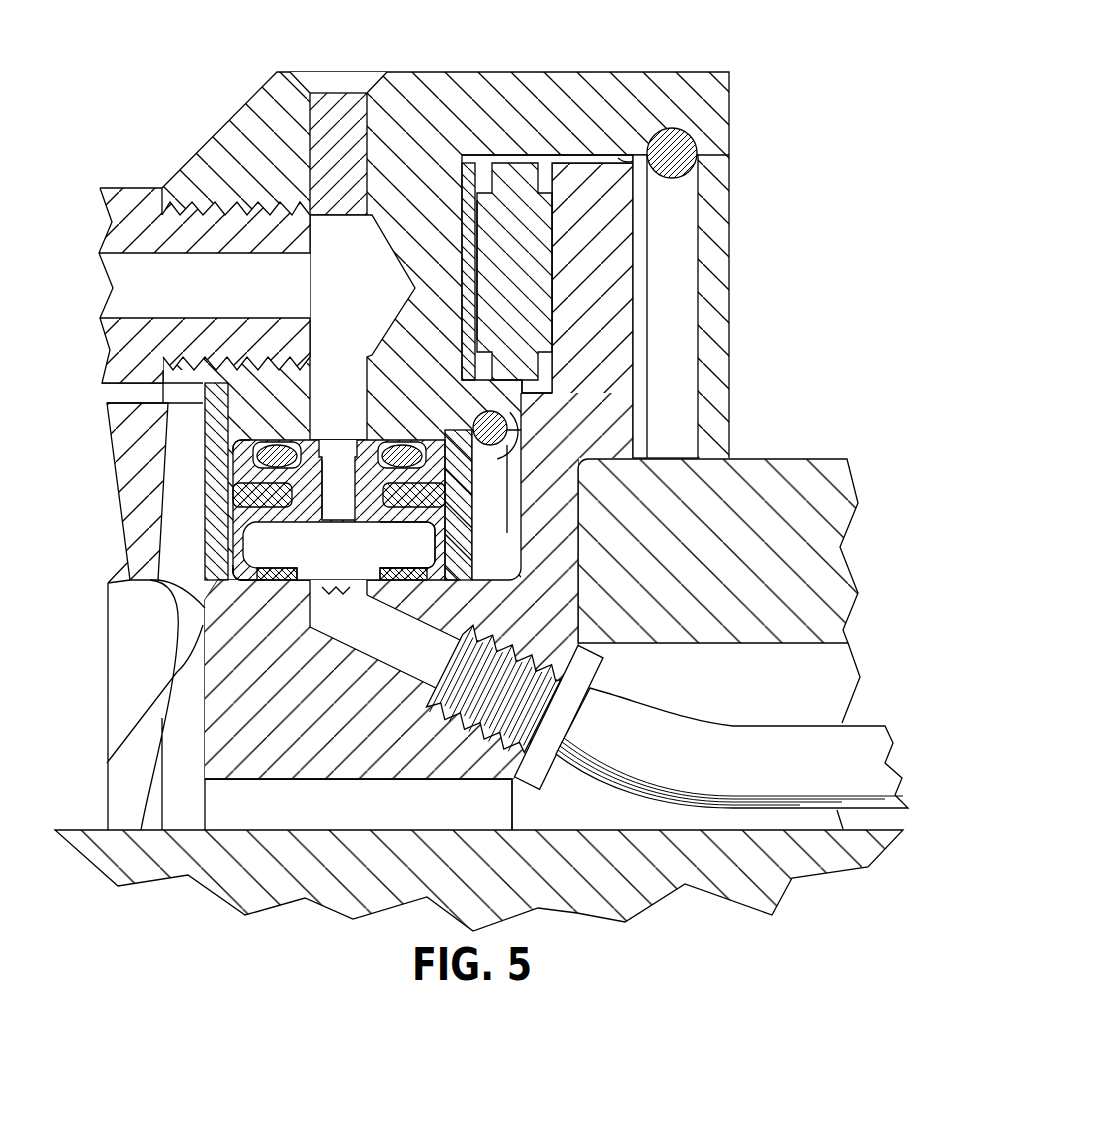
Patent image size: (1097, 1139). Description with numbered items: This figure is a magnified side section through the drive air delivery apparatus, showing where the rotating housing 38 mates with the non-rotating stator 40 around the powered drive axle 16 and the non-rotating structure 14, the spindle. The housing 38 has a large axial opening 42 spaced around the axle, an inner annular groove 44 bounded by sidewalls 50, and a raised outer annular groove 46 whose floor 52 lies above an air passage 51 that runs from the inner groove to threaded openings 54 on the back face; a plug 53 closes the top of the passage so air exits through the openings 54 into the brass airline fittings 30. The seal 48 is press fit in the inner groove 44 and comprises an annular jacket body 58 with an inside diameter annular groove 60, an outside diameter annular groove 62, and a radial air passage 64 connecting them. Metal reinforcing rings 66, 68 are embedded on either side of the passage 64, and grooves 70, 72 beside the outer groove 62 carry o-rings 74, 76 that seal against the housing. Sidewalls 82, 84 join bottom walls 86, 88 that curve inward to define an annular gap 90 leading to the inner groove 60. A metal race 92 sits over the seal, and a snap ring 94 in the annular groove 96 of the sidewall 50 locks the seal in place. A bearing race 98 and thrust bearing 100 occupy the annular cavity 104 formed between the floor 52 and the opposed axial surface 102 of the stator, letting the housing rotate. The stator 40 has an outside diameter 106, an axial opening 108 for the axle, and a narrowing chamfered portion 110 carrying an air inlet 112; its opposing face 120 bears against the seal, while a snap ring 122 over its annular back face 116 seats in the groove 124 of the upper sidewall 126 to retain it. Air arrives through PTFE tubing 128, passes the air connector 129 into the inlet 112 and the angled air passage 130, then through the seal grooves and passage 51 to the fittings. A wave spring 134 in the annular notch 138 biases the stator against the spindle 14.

The non-rotating structure 14 is at (787, 457).
The powered drive axle 16 is at (796, 890).
The brass airline fittings 30 is at (131, 188).
The housing 38 is at (597, 66).
The stator 40 is at (301, 784).
The axial opening 42 is at (206, 642).
The inner annular groove 44 is at (233, 454).
The outer annular groove 46 is at (543, 163).
The seal 48 is at (448, 581).
The sidewalls 50 is at (234, 441).
The air passage 51 is at (339, 298).
The floor 52 is at (477, 296).
The plug 53 is at (337, 92).
The threaded openings 54 is at (245, 204).
The annular jacket body 58 is at (233, 525).
The inside diameter annular groove 60 is at (261, 578).
The outside diameter annular groove 62 is at (338, 440).
The radial air passage 64 is at (326, 503).
The metal annular reinforcing ring 66 is at (233, 485).
The metal annular reinforcing ring 68 is at (440, 518).
The annular groove 70 is at (268, 442).
The annular groove 72 is at (410, 444).
The o-ring 74 is at (283, 444).
The o-ring 76 is at (400, 444).
The sidewall 82 is at (248, 540).
The sidewall 84 is at (426, 540).
The bottom wall 86 is at (278, 561).
The bottom wall 88 is at (400, 561).
The annular gap 90 is at (385, 634).
The metal race 92 is at (472, 548).
The snap ring 94 is at (507, 455).
The annular groove 96 is at (505, 416).
The bearing race 98 is at (470, 155).
The thrust bearing 100 is at (499, 278).
The opposed axial surface 102 is at (553, 222).
The annular cavity 104 is at (548, 371).
The outside diameter 106 is at (590, 157).
The axial opening 108 is at (407, 784).
The narrowing chamfered portion 110 is at (322, 723).
The air inlet 112 is at (450, 745).
The annular back face 116 is at (634, 289).
The opposing face 120 is at (522, 515).
The snap ring 122 is at (674, 180).
The groove 124 is at (680, 138).
The upper sidewall 126 is at (619, 157).
The PTFE high temperature tubing 128 is at (736, 724).
The air connector 129 is at (604, 662).
The air passage 130 is at (372, 645).
The wave spring 134 is at (110, 504).
The annular notch 138 is at (205, 667).